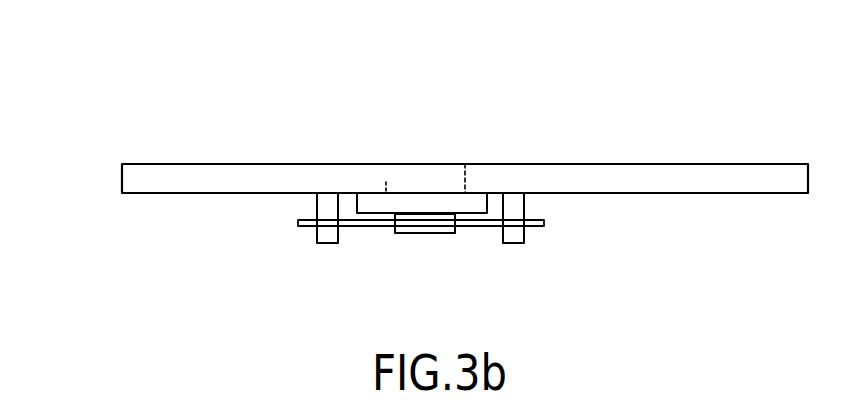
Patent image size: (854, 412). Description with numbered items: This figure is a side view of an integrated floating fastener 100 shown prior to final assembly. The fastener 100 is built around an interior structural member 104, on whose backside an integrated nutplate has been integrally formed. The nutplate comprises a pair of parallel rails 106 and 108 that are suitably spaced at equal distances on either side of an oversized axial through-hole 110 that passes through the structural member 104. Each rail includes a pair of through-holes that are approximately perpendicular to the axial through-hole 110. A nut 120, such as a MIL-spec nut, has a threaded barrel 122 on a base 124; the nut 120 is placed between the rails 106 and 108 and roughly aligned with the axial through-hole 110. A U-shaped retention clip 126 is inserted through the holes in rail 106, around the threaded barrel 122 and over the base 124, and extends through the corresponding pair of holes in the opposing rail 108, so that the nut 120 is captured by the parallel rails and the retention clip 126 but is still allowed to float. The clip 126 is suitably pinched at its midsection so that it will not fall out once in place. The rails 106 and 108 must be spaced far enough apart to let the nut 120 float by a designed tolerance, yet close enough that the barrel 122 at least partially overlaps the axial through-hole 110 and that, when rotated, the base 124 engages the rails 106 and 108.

The integrated floating fastener 100 is at (128, 110).
The interior structural member 104 is at (748, 163).
The oversized axial through-hole 110 is at (384, 172).
The nut 120 is at (364, 257).
The rail 106 is at (316, 231).
The opposing rail 108 is at (517, 243).
The threaded barrel 122 is at (438, 234).
The base 124 is at (461, 214).
The U-shaped retention clip 126 is at (298, 224).